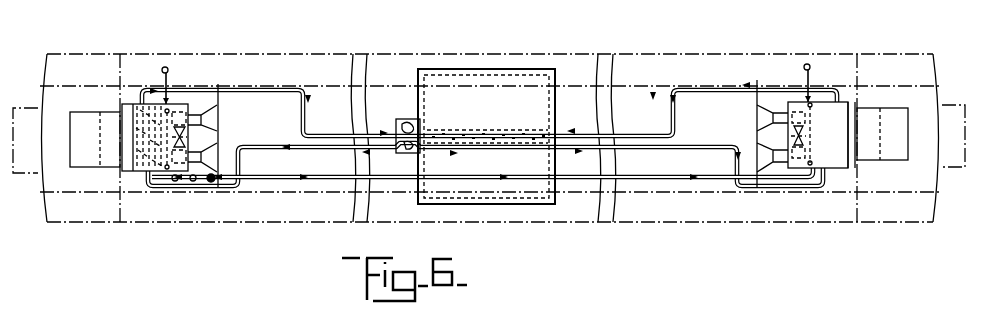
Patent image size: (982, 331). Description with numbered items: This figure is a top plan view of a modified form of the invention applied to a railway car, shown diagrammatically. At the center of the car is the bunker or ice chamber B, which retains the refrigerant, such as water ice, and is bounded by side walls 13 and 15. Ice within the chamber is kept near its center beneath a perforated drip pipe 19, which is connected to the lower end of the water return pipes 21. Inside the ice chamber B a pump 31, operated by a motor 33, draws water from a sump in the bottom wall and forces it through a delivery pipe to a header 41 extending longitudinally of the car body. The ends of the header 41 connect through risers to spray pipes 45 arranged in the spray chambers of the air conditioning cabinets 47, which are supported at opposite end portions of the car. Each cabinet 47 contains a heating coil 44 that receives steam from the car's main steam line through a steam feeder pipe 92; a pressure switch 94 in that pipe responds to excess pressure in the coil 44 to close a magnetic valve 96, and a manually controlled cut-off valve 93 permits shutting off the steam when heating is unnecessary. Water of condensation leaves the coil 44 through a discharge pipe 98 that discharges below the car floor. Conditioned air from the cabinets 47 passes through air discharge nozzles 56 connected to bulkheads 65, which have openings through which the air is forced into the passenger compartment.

The side wall 13 is at (556, 116).
The side wall 15 is at (418, 101).
The perforated drip pipe 19 is at (476, 132).
The water return pipe 21 is at (345, 135).
The pump 31 is at (408, 149).
The motor 33 is at (402, 127).
The header 41 is at (336, 149).
The heating coil 44 is at (187, 113).
The spray pipe 45 is at (150, 142).
The air conditioning cabinet 47 is at (177, 108).
The air discharge nozzle 56 is at (213, 157).
The bulkhead 65 is at (219, 105).
The steam feeder pipe 92 is at (168, 174).
The manually controlled cut-off valve 93 is at (214, 182).
The pressure switch 94 is at (176, 181).
The magnetic valve 96 is at (194, 181).
The discharge pipe 98 is at (162, 70).
The ice chamber B is at (500, 70).